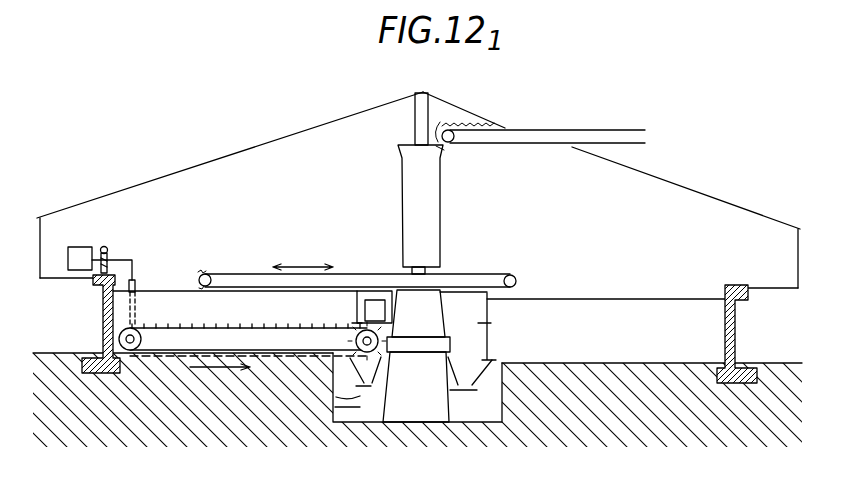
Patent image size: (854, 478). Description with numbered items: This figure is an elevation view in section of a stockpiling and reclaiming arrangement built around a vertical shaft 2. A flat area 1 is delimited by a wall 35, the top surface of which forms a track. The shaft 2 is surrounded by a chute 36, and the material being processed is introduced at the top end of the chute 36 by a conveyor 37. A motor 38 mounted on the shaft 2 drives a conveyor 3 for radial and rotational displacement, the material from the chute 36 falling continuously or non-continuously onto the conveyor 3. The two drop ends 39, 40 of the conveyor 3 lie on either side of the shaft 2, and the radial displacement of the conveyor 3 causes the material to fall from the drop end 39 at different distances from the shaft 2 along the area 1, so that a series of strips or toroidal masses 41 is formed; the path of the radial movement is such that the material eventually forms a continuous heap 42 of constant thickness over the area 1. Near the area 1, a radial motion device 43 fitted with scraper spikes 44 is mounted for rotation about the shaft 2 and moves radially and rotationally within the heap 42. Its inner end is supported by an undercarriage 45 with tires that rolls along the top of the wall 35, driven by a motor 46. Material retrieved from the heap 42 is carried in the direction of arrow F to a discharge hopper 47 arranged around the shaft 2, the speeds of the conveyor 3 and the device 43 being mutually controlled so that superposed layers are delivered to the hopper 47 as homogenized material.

The flat area 1 is at (604, 364).
The vertical shaft 2 is at (415, 113).
The conveyor 3 is at (238, 273).
The wall 35 is at (731, 340).
The chute 36 is at (438, 240).
The conveyor 37 is at (505, 128).
The motor 38 is at (372, 300).
The drop end 39 is at (202, 274).
The drop end 40 is at (513, 276).
The strips or toroidal masses 41 is at (150, 291).
The heap 42 is at (150, 308).
The radial motion device 43 is at (287, 352).
The scraper spikes 44 is at (213, 327).
The undercarriage 45 is at (104, 247).
The motor 46 is at (72, 247).
The discharge hopper 47 is at (358, 396).